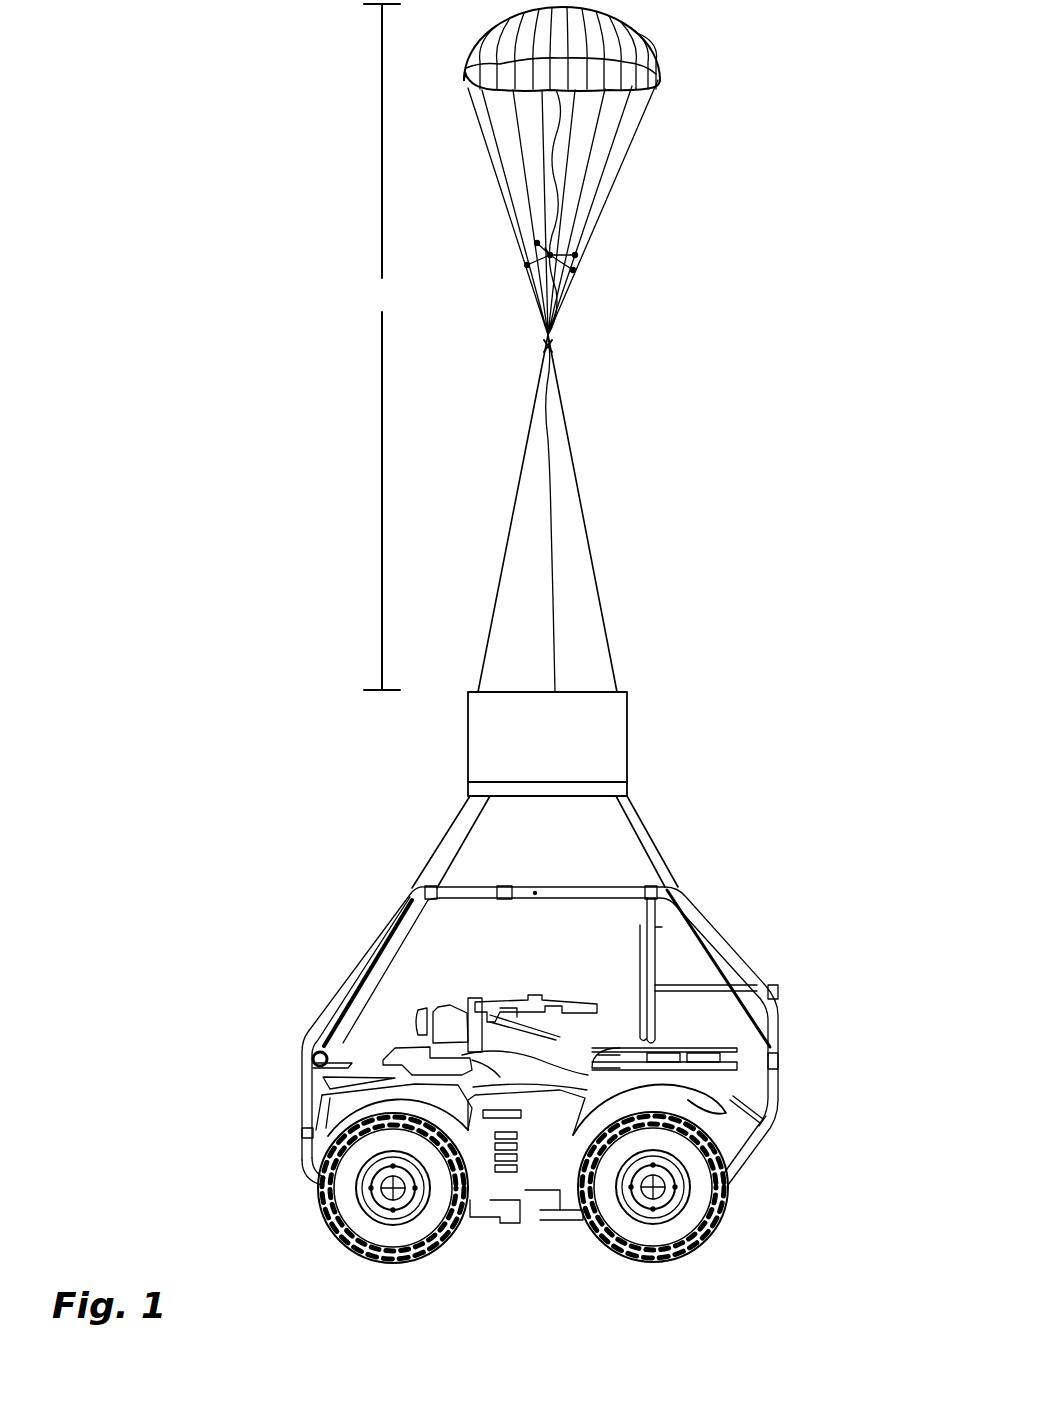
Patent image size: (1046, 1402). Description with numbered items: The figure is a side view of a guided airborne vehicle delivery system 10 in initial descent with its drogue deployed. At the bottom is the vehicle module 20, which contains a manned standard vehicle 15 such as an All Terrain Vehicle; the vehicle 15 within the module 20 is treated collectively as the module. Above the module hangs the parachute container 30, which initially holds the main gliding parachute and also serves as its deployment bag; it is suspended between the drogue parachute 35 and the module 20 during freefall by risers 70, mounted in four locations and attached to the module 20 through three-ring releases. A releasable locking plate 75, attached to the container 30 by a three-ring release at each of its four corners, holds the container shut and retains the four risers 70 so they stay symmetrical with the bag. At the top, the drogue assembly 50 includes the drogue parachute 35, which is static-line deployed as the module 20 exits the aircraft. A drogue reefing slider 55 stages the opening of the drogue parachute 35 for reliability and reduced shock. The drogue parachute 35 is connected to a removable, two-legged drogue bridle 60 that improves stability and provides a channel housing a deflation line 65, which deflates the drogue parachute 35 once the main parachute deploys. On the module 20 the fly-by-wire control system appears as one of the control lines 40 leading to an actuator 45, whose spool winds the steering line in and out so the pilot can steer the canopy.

The guided airborne vehicle delivery system 10 is at (815, 465).
The manned standard vehicle 15 is at (715, 1083).
The vehicle module 20 is at (727, 915).
The parachute container 30 is at (622, 732).
The drogue parachute 35 is at (655, 48).
The control lines 40 is at (345, 1025).
The actuators 45 is at (312, 1052).
The drogue assembly 50 is at (382, 347).
The drogue reefing slider 55 is at (575, 268).
The drogue bridle 60 is at (527, 470).
The deflation line 65 is at (553, 575).
The risers 70 is at (433, 852).
The releasable locking plate 75 is at (628, 790).